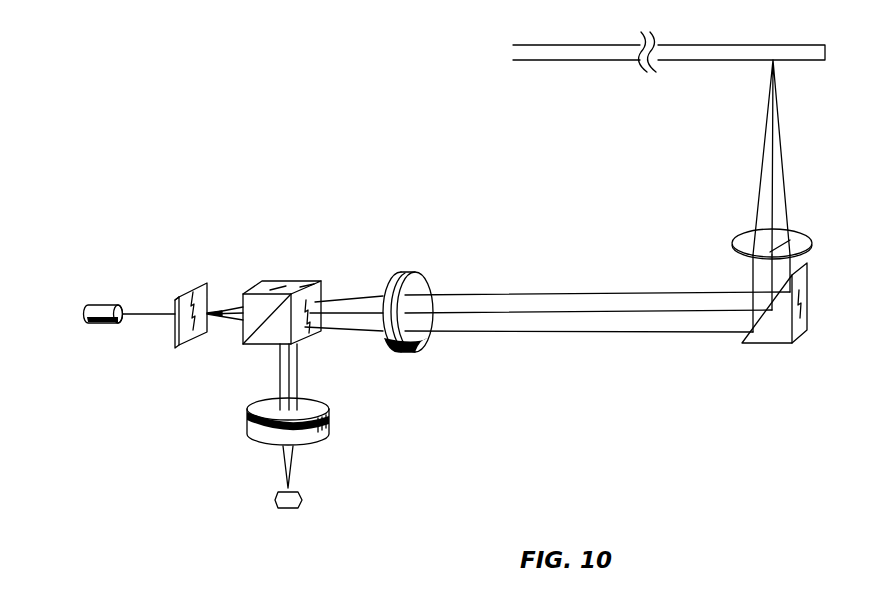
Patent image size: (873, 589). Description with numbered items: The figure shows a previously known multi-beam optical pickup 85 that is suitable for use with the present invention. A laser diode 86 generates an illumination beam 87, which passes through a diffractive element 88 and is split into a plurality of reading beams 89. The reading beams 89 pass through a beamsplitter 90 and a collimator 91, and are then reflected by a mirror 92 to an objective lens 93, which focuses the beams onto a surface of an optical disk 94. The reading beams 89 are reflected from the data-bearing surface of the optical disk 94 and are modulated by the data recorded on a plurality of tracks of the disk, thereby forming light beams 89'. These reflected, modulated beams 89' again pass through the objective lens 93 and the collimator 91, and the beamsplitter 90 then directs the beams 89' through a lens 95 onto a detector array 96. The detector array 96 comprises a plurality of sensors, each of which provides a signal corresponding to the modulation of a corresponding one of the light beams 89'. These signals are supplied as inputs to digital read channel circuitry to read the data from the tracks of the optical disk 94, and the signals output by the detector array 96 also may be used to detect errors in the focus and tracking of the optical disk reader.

The multi-beam optical pickup 85 is at (345, 80).
The laser diode 86 is at (104, 302).
The illumination beam 87 is at (149, 318).
The diffractive element 88 is at (207, 282).
The reading beams 89 is at (199, 347).
The light beams 89' is at (232, 382).
The beamsplitter 90 is at (308, 282).
The collimator 91 is at (400, 272).
The mirror 92 is at (778, 344).
The objective lens 93 is at (740, 246).
The optical disk 94 is at (578, 60).
The lens 95 is at (330, 420).
The detector array 96 is at (302, 498).